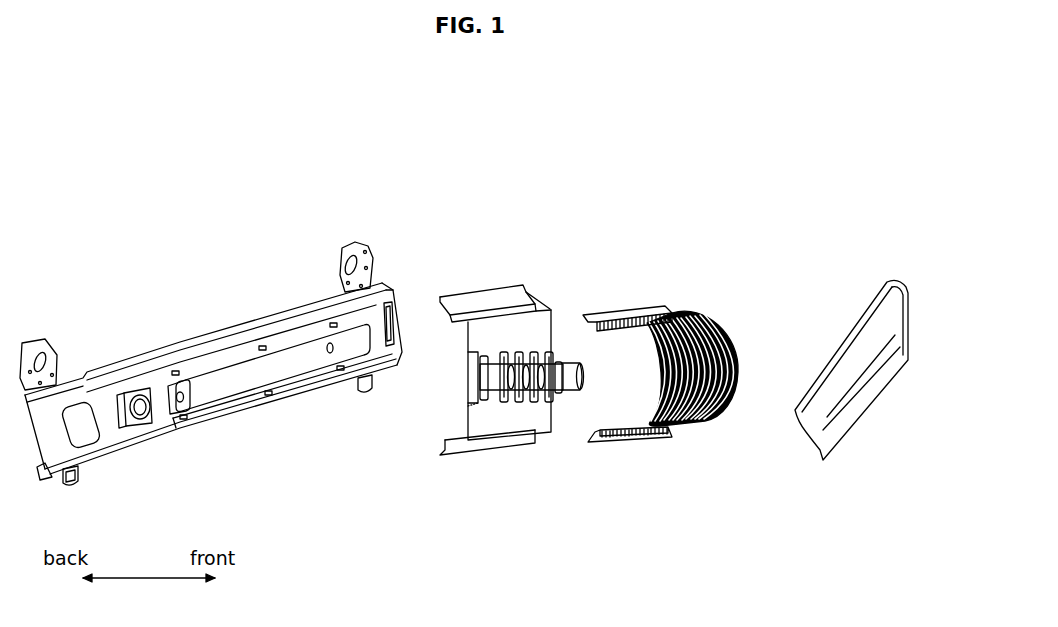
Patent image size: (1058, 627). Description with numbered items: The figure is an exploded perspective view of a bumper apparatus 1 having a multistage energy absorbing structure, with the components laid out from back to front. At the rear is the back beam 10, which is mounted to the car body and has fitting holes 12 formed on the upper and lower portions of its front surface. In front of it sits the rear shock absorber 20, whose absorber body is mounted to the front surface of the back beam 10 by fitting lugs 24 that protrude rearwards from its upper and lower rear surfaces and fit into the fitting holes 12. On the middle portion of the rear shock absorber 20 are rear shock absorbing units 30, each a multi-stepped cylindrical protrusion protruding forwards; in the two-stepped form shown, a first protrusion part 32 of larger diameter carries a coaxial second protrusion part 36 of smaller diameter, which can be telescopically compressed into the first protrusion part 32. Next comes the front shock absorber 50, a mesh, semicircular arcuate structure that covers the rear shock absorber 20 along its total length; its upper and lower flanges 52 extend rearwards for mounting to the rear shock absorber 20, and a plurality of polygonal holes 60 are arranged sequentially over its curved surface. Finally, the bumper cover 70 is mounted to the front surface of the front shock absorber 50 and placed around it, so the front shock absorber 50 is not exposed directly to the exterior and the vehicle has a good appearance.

The bumper apparatus 1 is at (648, 183).
The back beam 10 is at (217, 360).
The fitting holes 12 is at (174, 371).
The rear shock absorber 20 is at (515, 322).
The fitting lugs 24 is at (480, 294).
The rear shock absorbing unit 30 is at (566, 343).
The first protrusion part 32 is at (543, 403).
The second protrusion part 36 is at (568, 391).
The front shock absorber 50 is at (694, 314).
The upper and lower flanges 52 is at (638, 312).
The polygonal holes 60 is at (723, 341).
The bumper cover 70 is at (855, 412).